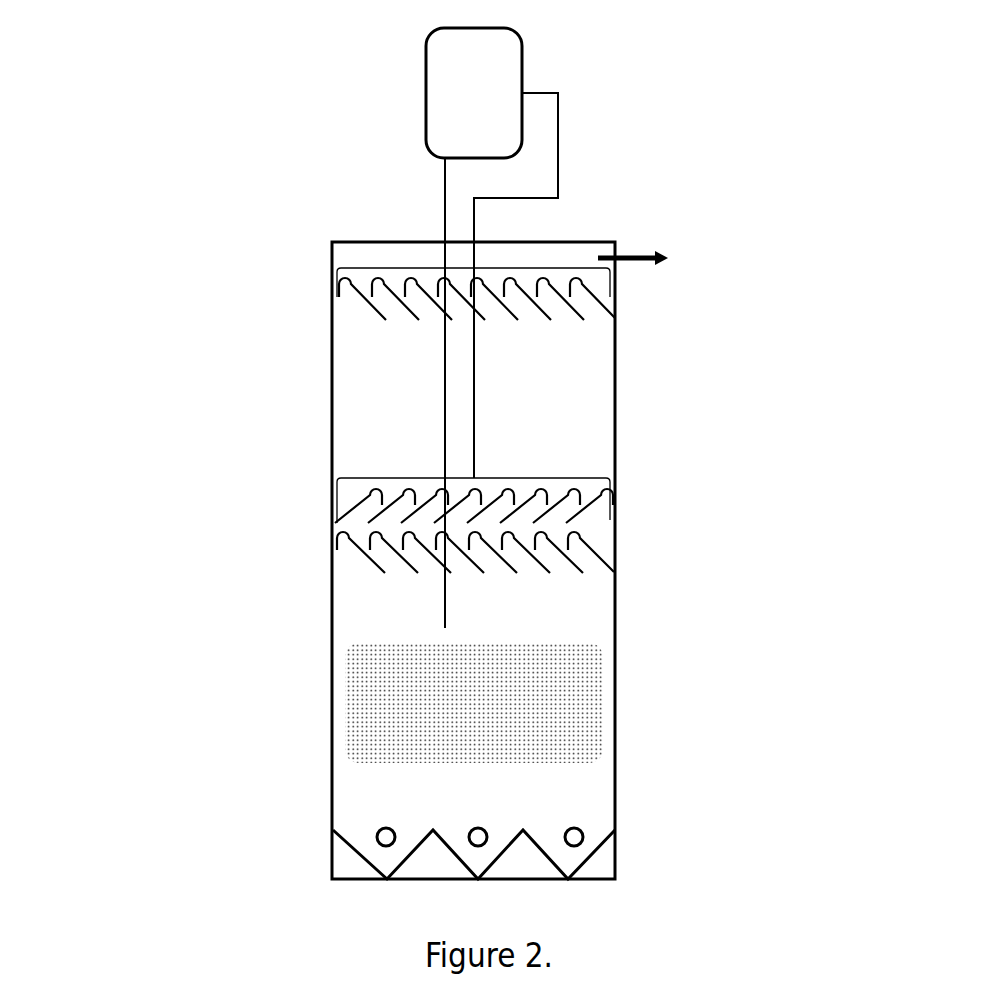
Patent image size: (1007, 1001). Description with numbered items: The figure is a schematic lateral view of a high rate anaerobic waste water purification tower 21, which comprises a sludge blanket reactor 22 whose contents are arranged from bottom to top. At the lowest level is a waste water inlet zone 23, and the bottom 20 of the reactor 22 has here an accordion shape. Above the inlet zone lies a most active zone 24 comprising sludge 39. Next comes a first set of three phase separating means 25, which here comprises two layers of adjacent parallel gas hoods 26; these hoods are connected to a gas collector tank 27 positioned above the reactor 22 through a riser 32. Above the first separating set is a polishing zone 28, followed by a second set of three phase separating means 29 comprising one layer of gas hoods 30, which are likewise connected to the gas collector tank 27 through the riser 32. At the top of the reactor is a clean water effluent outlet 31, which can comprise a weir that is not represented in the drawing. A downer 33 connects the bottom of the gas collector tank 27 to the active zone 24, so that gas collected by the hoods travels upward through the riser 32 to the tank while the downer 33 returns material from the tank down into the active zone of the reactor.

The bottom 20 is at (595, 858).
The high rate anaerobic waste water purification tower 21 is at (327, 185).
The sludge blanket reactor 22 is at (331, 383).
The waste water inlet zone 23 is at (375, 837).
The most active zone 24 is at (407, 780).
The first set of three phase separating means 25 is at (345, 525).
The gas hoods 26 is at (600, 550).
The gas collector tank 27 is at (500, 62).
The polishing zone 28 is at (533, 417).
The second set of three phase separating means 29 is at (345, 290).
The gas hoods 30 is at (592, 297).
The clean water effluent outlet 31 is at (660, 250).
The riser 32 is at (563, 118).
The downer 33 is at (445, 443).
The sludge 39 is at (430, 685).